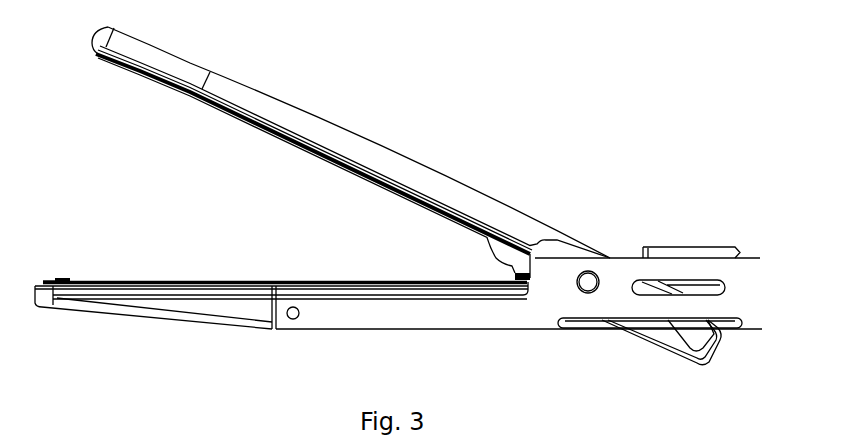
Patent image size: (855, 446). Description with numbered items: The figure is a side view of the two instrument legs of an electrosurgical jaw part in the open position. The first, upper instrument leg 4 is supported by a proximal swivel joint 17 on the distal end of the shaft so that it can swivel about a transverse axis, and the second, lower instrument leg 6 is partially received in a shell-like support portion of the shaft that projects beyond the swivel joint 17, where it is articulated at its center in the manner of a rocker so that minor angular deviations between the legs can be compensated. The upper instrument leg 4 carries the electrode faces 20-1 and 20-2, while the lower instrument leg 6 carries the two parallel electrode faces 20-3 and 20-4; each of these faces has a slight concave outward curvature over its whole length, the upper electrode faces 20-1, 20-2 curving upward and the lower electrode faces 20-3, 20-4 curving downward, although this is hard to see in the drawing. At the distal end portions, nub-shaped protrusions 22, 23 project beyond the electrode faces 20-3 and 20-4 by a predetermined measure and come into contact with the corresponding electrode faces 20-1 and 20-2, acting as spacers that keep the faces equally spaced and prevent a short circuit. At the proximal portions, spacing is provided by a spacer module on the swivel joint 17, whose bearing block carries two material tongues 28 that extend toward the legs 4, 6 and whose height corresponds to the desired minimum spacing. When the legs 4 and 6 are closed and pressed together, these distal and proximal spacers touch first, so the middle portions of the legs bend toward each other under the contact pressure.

The first instrument leg 4 is at (382, 157).
The second instrument leg 6 is at (262, 302).
The swivel joint 17 is at (590, 282).
The material tongues 28 is at (495, 245).
The electrode face 20-1 is at (288, 135).
The electrode face 20-2 is at (315, 161).
The electrode face 20-3 is at (227, 280).
The electrode face 20-4 is at (281, 264).
The protrusions 22 is at (58, 278).
The protrusions 23 is at (68, 243).